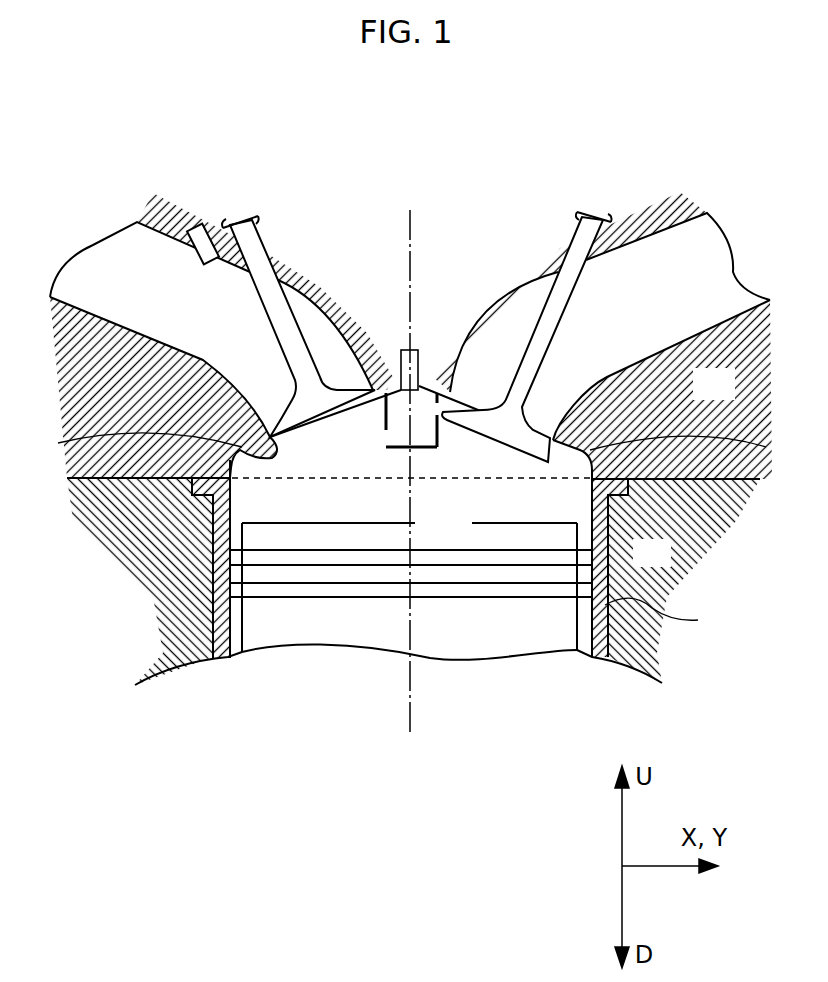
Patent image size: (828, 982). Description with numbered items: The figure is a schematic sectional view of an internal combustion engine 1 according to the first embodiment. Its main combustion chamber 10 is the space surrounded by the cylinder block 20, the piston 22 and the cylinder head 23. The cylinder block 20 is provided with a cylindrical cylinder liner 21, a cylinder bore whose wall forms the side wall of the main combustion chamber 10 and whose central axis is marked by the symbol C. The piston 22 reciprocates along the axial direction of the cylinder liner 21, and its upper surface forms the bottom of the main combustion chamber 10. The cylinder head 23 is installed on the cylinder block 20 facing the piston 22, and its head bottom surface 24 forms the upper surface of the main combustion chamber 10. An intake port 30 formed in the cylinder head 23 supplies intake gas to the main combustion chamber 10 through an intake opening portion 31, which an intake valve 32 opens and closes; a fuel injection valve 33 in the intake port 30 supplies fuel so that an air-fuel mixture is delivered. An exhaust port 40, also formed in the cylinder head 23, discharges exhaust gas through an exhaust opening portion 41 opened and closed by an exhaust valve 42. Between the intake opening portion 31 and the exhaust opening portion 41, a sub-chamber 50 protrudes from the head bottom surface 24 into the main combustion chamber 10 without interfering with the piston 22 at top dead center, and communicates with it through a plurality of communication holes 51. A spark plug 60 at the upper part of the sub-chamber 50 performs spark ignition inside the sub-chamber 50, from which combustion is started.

The internal combustion engine 1 is at (387, 834).
The main combustion chamber 10 is at (433, 514).
The cylinder block 20 is at (413, 572).
The cylinder liner 21 is at (667, 618).
The piston 22 is at (512, 640).
The cylinder head 23 is at (703, 397).
The head bottom surface 24 is at (447, 400).
The intake port 30 is at (117, 272).
The intake opening portion 31 is at (135, 447).
The intake valve 32 is at (278, 318).
The fuel injection valve 33 is at (203, 224).
The exhaust port 40 is at (730, 277).
The exhaust opening portion 41 is at (692, 449).
The exhaust valve 42 is at (567, 303).
The sub-chamber 50 is at (398, 365).
The communication holes 51 is at (385, 437).
The spark plug 60 is at (417, 349).